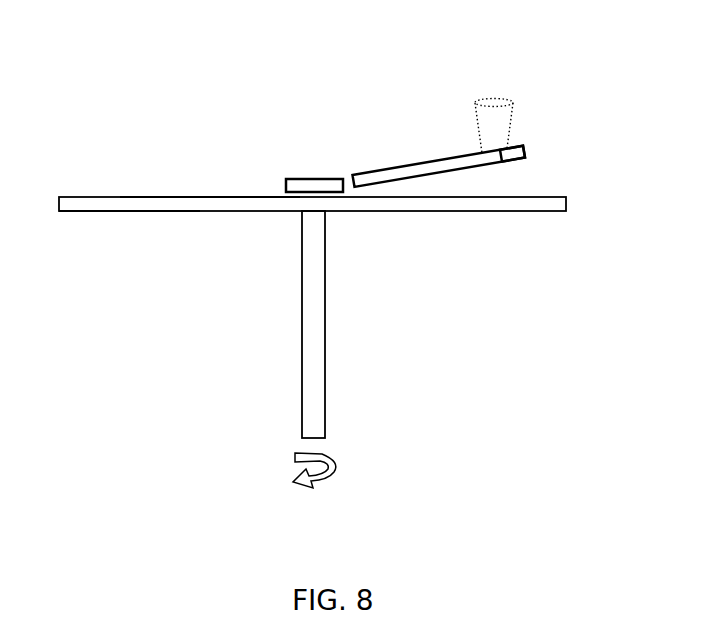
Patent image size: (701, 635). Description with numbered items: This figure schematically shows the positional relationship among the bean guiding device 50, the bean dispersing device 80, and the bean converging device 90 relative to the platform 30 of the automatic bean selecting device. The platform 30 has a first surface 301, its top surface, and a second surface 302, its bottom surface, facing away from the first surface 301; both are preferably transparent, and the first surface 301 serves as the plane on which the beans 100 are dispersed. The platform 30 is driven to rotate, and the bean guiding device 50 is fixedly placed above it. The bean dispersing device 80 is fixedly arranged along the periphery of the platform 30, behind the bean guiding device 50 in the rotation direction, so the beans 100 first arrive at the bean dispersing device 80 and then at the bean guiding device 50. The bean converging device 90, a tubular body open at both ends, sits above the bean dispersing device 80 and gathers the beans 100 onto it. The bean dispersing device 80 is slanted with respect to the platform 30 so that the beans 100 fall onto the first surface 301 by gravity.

The platform 30 is at (567, 204).
The first surface 301 is at (187, 196).
The second surface 302 is at (92, 212).
The bean guiding device 50 is at (313, 178).
The beans 100 is at (385, 173).
The bean dispersing device 80 is at (525, 155).
The bean converging device 90 is at (508, 127).